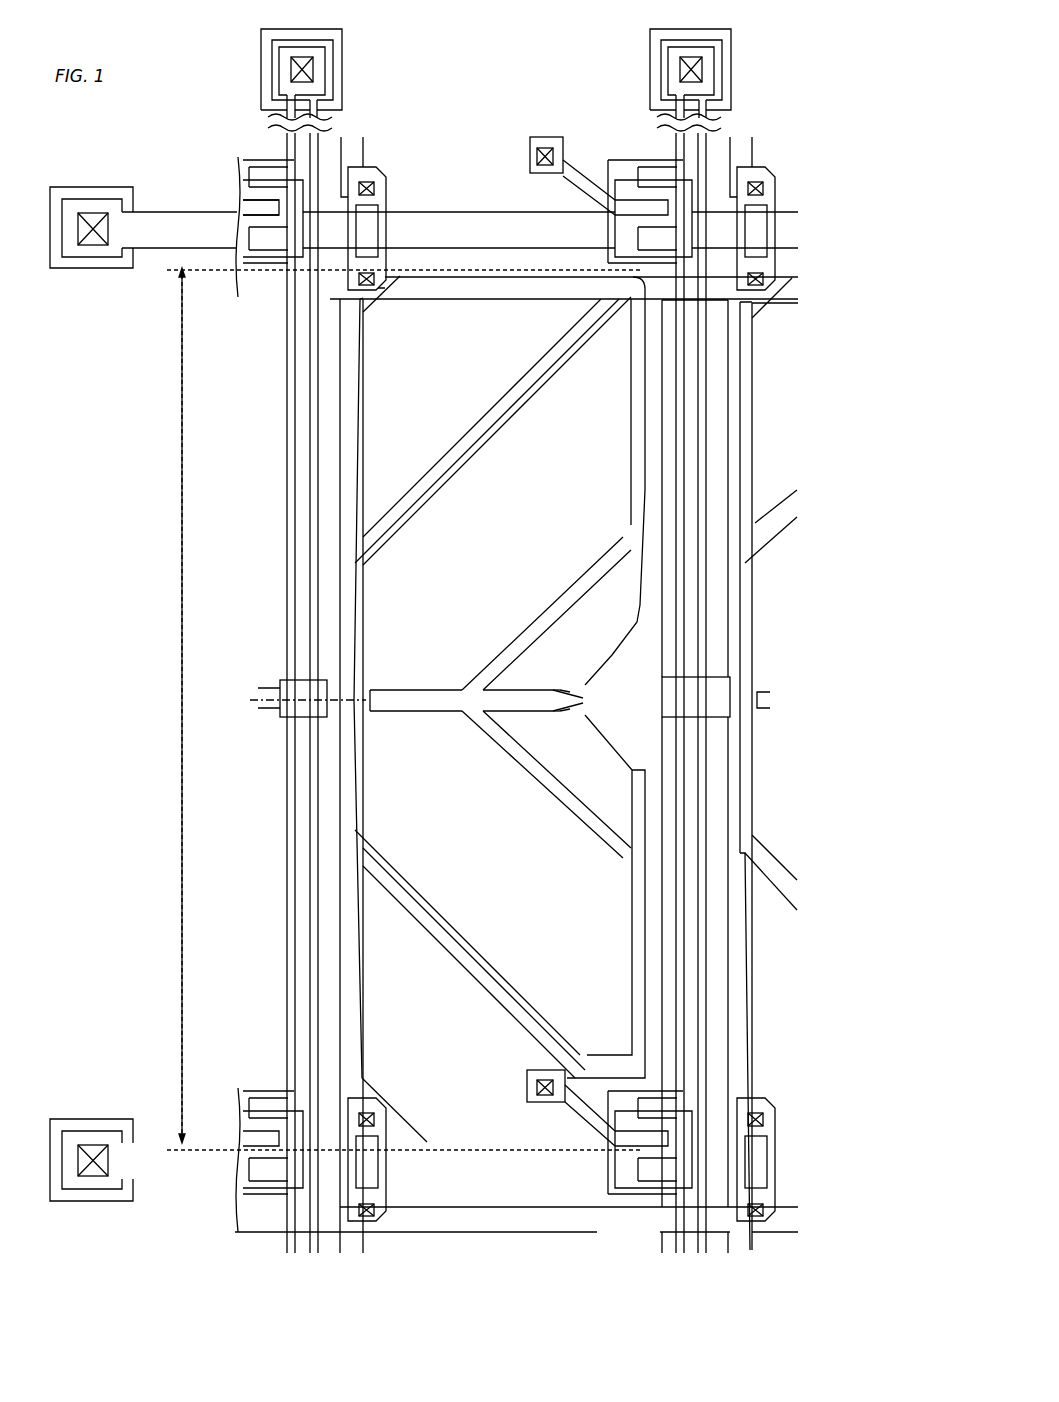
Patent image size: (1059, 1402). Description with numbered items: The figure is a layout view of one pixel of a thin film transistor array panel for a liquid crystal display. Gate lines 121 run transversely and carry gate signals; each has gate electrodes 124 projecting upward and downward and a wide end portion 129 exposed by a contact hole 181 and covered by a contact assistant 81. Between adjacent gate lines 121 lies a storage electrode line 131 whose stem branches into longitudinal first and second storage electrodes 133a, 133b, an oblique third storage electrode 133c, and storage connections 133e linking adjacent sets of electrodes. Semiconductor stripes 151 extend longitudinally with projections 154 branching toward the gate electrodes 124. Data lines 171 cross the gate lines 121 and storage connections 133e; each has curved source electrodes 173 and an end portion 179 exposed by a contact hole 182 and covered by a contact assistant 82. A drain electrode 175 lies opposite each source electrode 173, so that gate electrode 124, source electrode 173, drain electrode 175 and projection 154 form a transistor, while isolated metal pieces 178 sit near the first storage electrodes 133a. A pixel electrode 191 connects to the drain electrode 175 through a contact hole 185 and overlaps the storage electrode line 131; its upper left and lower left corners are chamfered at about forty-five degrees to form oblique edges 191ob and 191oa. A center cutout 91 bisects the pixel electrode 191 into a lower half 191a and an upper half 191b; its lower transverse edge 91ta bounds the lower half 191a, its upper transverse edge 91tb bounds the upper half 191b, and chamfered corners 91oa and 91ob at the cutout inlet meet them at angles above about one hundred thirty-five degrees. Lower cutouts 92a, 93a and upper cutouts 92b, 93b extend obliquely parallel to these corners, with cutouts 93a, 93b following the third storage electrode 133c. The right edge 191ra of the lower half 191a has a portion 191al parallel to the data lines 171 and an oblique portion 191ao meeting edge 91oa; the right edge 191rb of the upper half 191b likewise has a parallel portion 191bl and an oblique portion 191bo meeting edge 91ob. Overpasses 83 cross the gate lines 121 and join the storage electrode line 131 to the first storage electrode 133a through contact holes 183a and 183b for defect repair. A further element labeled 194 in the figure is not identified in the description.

The contact assistant 81 is at (66, 1202).
The contact assistant 82 is at (342, 47).
The overpass 83 is at (362, 167).
The center cutout 91 is at (815, 632).
The lower right corner of the upper half 91ob is at (600, 692).
The upper transverse edge 91tb is at (605, 699).
The lower transverse edge 91ta is at (605, 703).
The upper right corner of the lower half 91oa is at (600, 710).
The lower cutout 92a is at (531, 774).
The upper cutout 92b is at (556, 592).
The lower cutout 93a is at (492, 976).
The upper cutout 93b is at (494, 411).
The gate line 121 is at (506, 270).
The gate electrode 124 is at (627, 1173).
The end portion of the gate line 129 is at (108, 1202).
The storage electrode line 131 is at (458, 270).
The first storage electrode 133a is at (340, 522).
The second storage electrode 133b is at (662, 403).
The third storage electrode 133c is at (433, 460).
The storage connection 133e is at (276, 686).
The semiconductor stripe 151 is at (309, 608).
The projection 154 is at (608, 1150).
The data line 171 is at (315, 822).
The source electrode 173 is at (657, 1172).
The drain electrode 175 is at (525, 1087).
The isolated metal piece 178 is at (303, 295).
The end portion of the data line 179 is at (276, 69).
The contact hole 181 is at (92, 1143).
The contact hole 182 is at (315, 69).
The contact hole 183a is at (365, 280).
The contact hole 183b is at (377, 182).
The contact hole 185 is at (543, 1075).
The pixel electrode 191 is at (133, 503).
The lower half 191a is at (392, 896).
The upper half 191b is at (392, 487).
The oblique edge 191ob is at (360, 304).
The oblique edge 191oa is at (405, 1125).
The right edge of the upper half 191rb is at (845, 538).
The right edge of the lower half 191ra is at (845, 805).
The portion of the right edge of the upper half 191bl is at (740, 530).
The oblique portion of the right edge of the upper half 191bo is at (662, 600).
The portion of the right edge of the lower half 191al is at (643, 805).
The oblique portion of the right edge of the lower half 191ao is at (645, 883).
The coupling bridge 194 is at (502, 645).